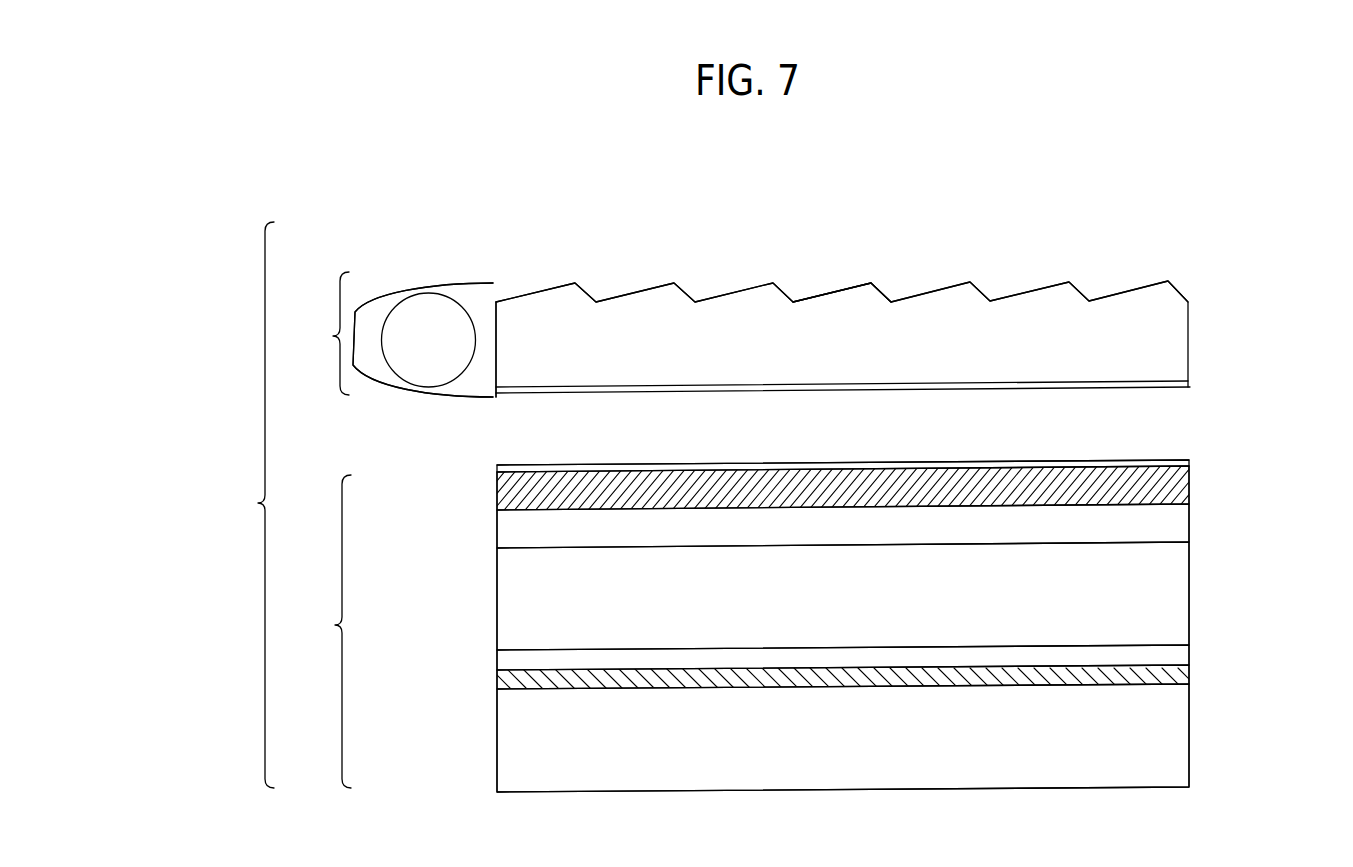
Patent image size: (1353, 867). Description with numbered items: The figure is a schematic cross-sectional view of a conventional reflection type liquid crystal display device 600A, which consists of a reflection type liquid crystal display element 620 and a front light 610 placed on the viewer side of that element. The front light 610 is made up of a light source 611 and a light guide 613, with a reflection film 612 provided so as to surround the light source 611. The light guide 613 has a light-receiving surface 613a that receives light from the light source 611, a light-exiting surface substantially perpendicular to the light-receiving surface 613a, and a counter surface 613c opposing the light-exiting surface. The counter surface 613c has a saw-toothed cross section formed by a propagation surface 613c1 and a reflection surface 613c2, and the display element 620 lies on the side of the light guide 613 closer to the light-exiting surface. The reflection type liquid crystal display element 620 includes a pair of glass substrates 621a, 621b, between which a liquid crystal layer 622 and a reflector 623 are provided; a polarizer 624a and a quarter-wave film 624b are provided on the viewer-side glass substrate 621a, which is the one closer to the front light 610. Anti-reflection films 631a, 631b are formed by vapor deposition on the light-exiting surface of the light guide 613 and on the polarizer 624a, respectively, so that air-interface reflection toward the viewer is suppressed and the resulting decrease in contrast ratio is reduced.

The reflection type liquid crystal display device 600A is at (225, 505).
The front light 610 is at (382, 334).
The light source 611 is at (405, 317).
The reflection film 612 is at (456, 283).
The light guide 613 is at (1048, 315).
The light-receiving surface 613a is at (496, 340).
The counter surface 613c is at (666, 387).
The propagation surface 613c1 is at (826, 292).
The reflection surface 613c2 is at (885, 296).
The anti-reflection film 631a is at (1188, 386).
The anti-reflection film 631b is at (1189, 462).
The reflection type liquid crystal display element 620 is at (734, 626).
The polarizer 624a is at (515, 490).
The λ/4 film 624b is at (515, 530).
The glass substrate 621a is at (515, 600).
The liquid crystal layer 622 is at (515, 655).
The reflector 623 is at (515, 683).
The glass substrate 621b is at (515, 745).